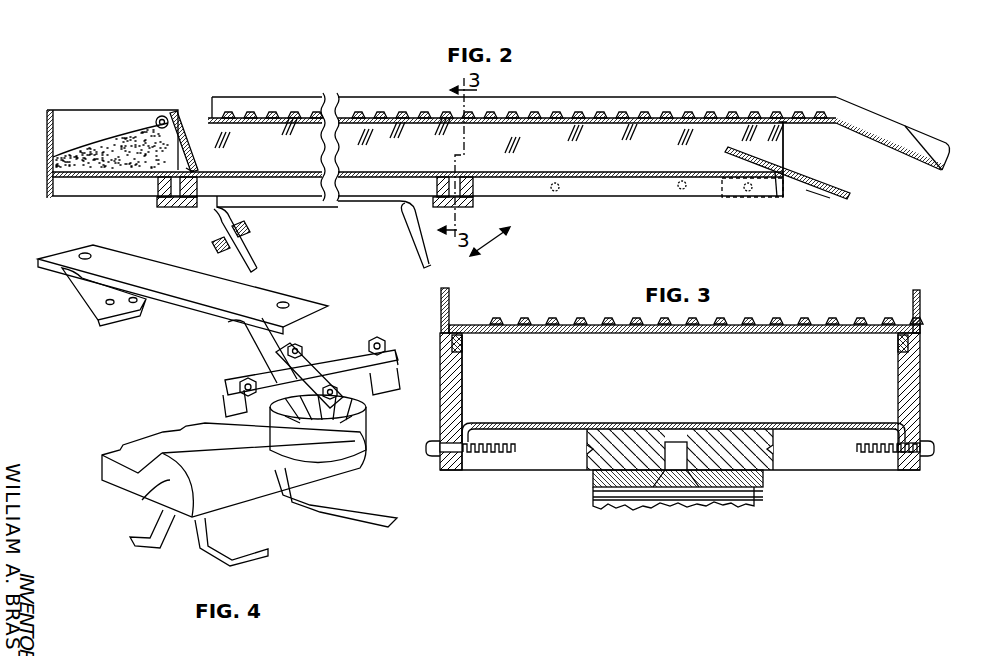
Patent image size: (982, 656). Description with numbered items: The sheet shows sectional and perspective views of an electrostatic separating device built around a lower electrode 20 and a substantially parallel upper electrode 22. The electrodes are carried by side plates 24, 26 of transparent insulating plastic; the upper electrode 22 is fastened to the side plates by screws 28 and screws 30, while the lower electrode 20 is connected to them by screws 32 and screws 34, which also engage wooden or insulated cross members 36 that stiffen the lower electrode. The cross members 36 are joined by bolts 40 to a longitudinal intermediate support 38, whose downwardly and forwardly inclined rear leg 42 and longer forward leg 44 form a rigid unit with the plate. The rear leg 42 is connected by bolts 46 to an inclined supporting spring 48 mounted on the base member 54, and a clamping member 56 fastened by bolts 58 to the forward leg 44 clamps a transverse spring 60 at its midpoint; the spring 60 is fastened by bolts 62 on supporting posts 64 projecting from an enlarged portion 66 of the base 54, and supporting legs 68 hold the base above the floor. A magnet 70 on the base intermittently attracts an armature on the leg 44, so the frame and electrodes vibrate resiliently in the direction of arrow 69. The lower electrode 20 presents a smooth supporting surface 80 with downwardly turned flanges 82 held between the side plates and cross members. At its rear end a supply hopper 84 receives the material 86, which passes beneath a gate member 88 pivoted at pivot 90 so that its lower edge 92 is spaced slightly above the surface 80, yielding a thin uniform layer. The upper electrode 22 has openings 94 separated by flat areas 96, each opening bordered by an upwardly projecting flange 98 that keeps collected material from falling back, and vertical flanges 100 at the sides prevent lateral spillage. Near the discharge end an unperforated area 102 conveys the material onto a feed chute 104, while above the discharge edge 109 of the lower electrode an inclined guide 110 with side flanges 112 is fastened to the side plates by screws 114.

In FIG. 2, the lower electrode 20 is at (631, 180).
In FIG. 3, the lower electrode 20 is at (545, 422).
In FIG. 2, the upper electrode 22 is at (761, 117).
In FIG. 3, the upper electrode 22 is at (669, 334).
In FIG. 2, the side plate 24 is at (785, 151).
In FIG. 3, the side plate 24 is at (457, 395).
In FIG. 3, the side plate 26 is at (898, 385).
In FIG. 3, the screws 28 is at (452, 332).
In FIG. 3, the screws 30 is at (904, 330).
In FIG. 3, the screws 32 is at (438, 449).
In FIG. 3, the screws 34 is at (925, 446).
In FIG. 2, the cross members 36 is at (470, 188).
In FIG. 3, the cross members 36 is at (547, 458).
In FIG. 2, the intermediate support 38 is at (370, 202).
In FIG. 3, the intermediate support 38 is at (602, 482).
In FIG. 4, the intermediate support 38 is at (186, 295).
In FIG. 2, the bolts 40 is at (172, 207).
In FIG. 3, the bolts 40 is at (677, 480).
In FIG. 2, the rear supporting leg 42 is at (217, 223).
In FIG. 4, the rear supporting leg 42 is at (98, 299).
In FIG. 2, the forward supporting leg 44 is at (425, 255).
In FIG. 4, the forward supporting leg 44 is at (257, 336).
In FIG. 2, the bolts 46 is at (248, 228).
In FIG. 2, the supporting spring 48 is at (256, 260).
In FIG. 4, the base member 54 is at (124, 452).
In FIG. 4, the clamping member 56 is at (315, 372).
In FIG. 4, the bolts 58 is at (302, 348).
In FIG. 4, the transverse spring 60 is at (340, 335).
In FIG. 4, the bolts 62 is at (249, 376).
In FIG. 4, the supporting posts 64 is at (223, 432).
In FIG. 4, the enlarged portion 66 is at (142, 500).
In FIG. 4, the supporting legs 68 is at (238, 530).
In FIG. 2, the arrow 69 is at (490, 244).
In FIG. 4, the magnet 70 is at (352, 425).
In FIG. 3, the supporting surface 80 is at (617, 425).
In FIG. 3, the flanges 82 is at (470, 460).
In FIG. 2, the supply hopper 84 is at (53, 137).
In FIG. 2, the material 86 is at (121, 140).
In FIG. 2, the gate member 88 is at (187, 107).
In FIG. 2, the pivot 90 is at (162, 116).
In FIG. 2, the lower edge 92 is at (193, 168).
In FIG. 3, the openings 94 is at (514, 329).
In FIG. 3, the flat areas 96 is at (560, 334).
In FIG. 3, the flange 98 is at (535, 330).
In FIG. 3, the vertical flanges 100 is at (449, 302).
In FIG. 2, the unperforated area 102 is at (807, 121).
In FIG. 2, the feed chute 104 is at (896, 142).
In FIG. 2, the discharge edge 109 is at (775, 172).
In FIG. 2, the guide 110 is at (790, 165).
In FIG. 2, the side flanges 112 is at (808, 196).
In FIG. 2, the screws 114 is at (748, 192).